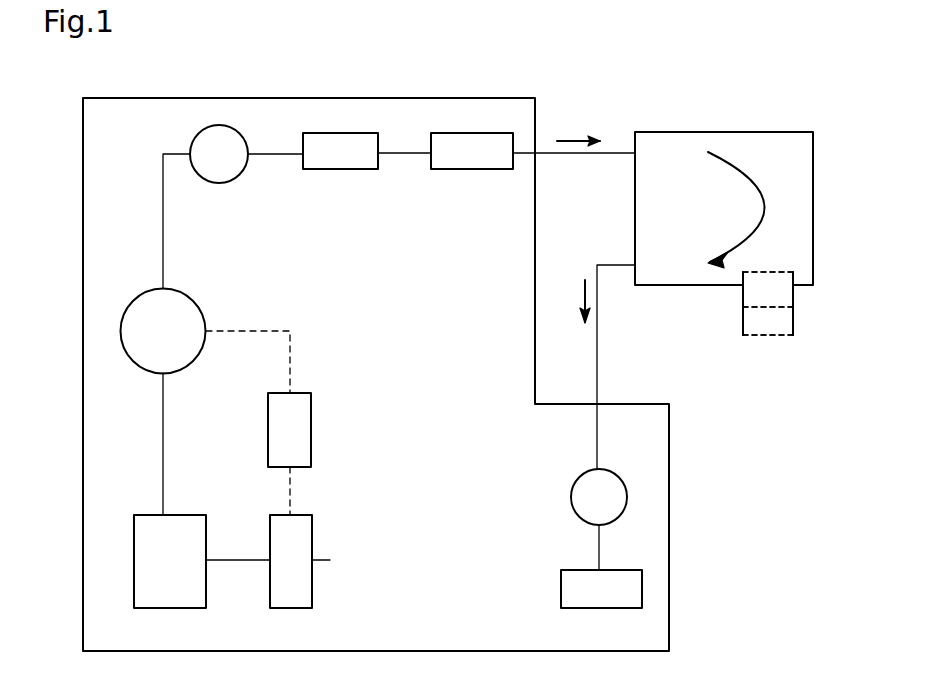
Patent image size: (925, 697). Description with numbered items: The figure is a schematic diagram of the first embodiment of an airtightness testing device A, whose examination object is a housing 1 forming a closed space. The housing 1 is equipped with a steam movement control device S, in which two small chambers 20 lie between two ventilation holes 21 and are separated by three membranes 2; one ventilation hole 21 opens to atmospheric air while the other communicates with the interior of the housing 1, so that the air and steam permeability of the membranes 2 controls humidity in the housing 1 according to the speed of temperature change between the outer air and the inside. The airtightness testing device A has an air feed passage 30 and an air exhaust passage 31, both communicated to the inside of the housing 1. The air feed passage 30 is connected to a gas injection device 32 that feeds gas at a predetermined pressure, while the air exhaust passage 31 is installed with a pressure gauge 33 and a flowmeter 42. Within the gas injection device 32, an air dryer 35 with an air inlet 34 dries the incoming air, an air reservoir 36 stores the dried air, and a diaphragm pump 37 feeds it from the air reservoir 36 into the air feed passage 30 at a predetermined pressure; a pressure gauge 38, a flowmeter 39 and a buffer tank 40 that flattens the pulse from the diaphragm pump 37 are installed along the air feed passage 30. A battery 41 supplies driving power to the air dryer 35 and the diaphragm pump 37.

The airtightness testing device A is at (468, 98).
The housing 1 is at (760, 132).
The membrane 2 is at (752, 336).
The small chamber 20 is at (787, 296).
The ventilation hole 21 is at (773, 272).
The steam movement control device S is at (795, 322).
The air feed passage 30 is at (588, 153).
The air exhaust passage 31 is at (597, 361).
The gas injection device 32 is at (231, 452).
The pressure gauge 33 is at (571, 497).
The air inlet 34 is at (318, 560).
The air dryer 35 is at (312, 583).
The air reservoir 36 is at (183, 607).
The diaphragm pump 37 is at (185, 305).
The pressure gauge 38 is at (219, 183).
The flowmeter 39 is at (340, 169).
The buffer tank 40 is at (465, 169).
The battery 41 is at (302, 432).
The flowmeter 42 is at (565, 585).